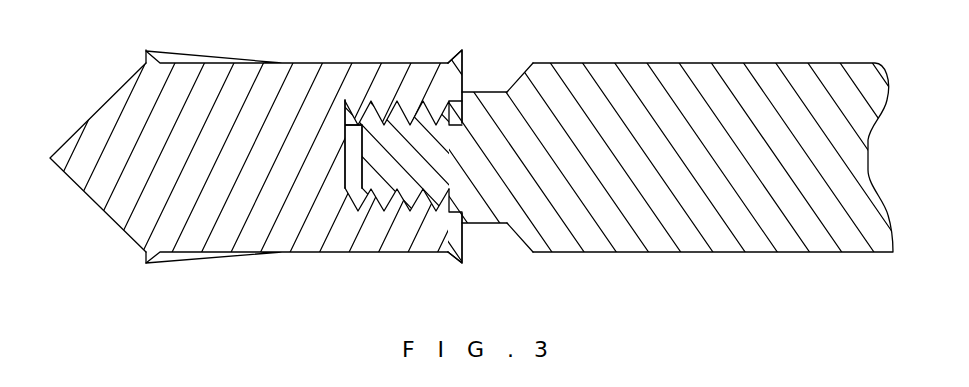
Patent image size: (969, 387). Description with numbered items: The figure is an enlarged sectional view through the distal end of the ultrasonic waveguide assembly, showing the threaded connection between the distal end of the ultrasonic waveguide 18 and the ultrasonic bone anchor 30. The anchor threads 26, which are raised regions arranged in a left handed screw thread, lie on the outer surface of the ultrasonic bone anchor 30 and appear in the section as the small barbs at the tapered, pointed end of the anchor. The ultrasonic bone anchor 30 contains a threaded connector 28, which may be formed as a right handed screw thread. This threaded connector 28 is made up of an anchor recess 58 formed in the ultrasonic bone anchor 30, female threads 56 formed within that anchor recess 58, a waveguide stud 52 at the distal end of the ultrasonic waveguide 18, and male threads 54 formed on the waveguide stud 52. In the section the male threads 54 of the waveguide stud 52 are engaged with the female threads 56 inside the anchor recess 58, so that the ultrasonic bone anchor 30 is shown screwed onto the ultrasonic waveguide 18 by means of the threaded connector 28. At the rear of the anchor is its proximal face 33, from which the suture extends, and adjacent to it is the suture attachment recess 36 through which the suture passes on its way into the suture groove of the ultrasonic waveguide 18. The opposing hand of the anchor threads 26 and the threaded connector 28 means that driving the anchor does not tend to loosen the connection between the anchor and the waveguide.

The ultrasonic waveguide 18 is at (668, 63).
The anchor threads 26 is at (146, 51).
The threaded connector 28 is at (416, 118).
The ultrasonic bone anchor 30 is at (282, 63).
The proximal face 33 is at (463, 62).
The suture attachment recess 36 is at (512, 70).
The waveguide stud 52 is at (392, 173).
The male threads 54 is at (440, 189).
The female threads 56 is at (345, 123).
The anchor recess 58 is at (333, 250).